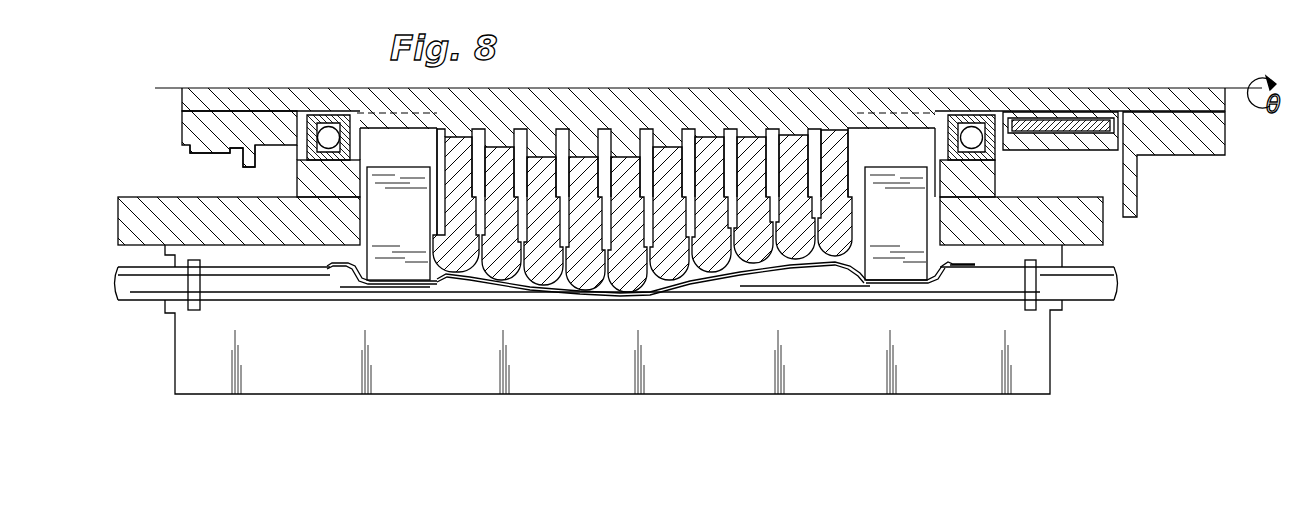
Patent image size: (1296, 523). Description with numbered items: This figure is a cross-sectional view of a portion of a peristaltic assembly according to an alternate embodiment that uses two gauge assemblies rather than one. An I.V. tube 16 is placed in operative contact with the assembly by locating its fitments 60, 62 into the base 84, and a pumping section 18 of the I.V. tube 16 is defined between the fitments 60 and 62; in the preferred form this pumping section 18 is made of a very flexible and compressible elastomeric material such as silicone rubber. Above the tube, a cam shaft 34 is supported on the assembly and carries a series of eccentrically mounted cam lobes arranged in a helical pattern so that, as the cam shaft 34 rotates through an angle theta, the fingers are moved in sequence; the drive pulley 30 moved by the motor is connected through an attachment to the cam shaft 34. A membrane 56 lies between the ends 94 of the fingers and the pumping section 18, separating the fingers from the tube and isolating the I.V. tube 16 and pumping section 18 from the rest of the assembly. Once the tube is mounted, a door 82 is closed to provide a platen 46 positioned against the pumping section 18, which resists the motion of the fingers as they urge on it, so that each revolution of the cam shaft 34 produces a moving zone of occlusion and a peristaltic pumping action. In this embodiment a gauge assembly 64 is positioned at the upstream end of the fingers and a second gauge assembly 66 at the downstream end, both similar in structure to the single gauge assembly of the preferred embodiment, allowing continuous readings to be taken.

The I.V. tube 16 is at (140, 288).
The pumping section 18 is at (322, 290).
The drive pulley 30 is at (210, 153).
The cam shaft 34 is at (190, 137).
The platen 46 is at (513, 293).
The membrane 56 is at (393, 287).
The fitment 60 is at (196, 311).
The fitment 62 is at (1031, 312).
The gauge assembly 64 is at (404, 231).
The second gauge assembly 66 is at (914, 231).
The door 82 is at (806, 372).
The base 84 is at (175, 254).
The ends 94 is at (585, 290).